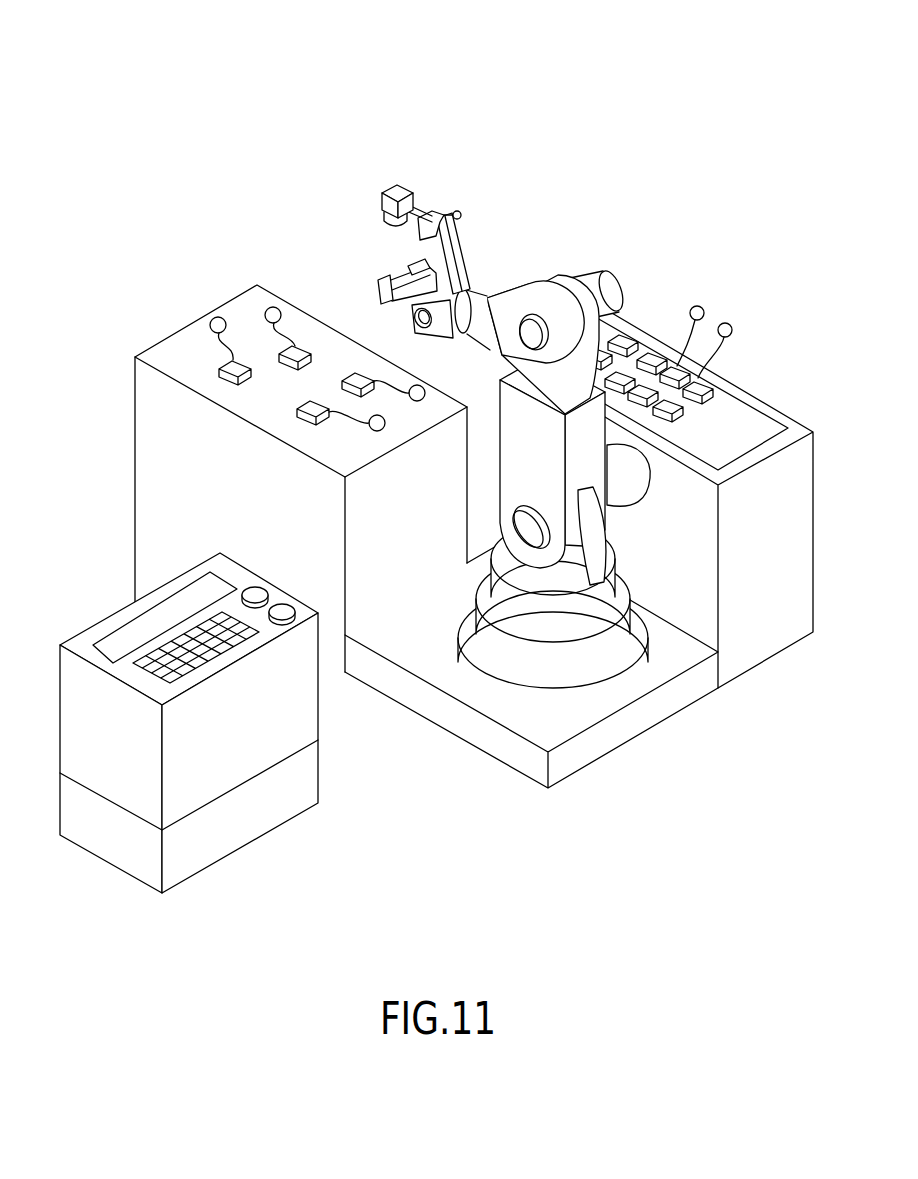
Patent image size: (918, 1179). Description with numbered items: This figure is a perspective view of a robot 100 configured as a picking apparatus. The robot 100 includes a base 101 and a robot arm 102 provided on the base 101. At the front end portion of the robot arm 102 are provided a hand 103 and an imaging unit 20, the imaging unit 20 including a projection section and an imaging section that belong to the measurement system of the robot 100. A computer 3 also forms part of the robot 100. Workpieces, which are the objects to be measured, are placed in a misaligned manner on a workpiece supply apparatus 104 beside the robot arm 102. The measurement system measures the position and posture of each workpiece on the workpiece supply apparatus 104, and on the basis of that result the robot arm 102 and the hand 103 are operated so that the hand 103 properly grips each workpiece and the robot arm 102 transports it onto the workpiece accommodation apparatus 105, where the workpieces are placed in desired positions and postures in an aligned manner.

The robot 100 is at (616, 97).
The base 101 is at (641, 720).
The robot arm 102 is at (568, 266).
The hand 103 is at (378, 300).
The workpiece supply apparatus 104 is at (248, 307).
The workpiece accommodation apparatus 105 is at (750, 388).
The imaging unit 20 is at (400, 190).
The computer 3 is at (100, 604).